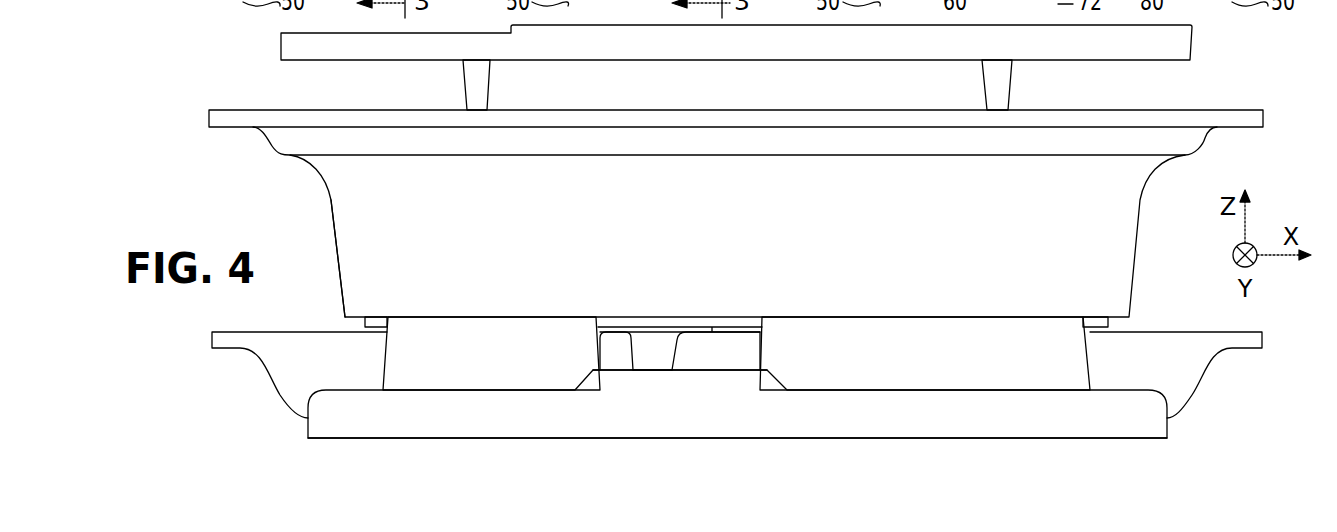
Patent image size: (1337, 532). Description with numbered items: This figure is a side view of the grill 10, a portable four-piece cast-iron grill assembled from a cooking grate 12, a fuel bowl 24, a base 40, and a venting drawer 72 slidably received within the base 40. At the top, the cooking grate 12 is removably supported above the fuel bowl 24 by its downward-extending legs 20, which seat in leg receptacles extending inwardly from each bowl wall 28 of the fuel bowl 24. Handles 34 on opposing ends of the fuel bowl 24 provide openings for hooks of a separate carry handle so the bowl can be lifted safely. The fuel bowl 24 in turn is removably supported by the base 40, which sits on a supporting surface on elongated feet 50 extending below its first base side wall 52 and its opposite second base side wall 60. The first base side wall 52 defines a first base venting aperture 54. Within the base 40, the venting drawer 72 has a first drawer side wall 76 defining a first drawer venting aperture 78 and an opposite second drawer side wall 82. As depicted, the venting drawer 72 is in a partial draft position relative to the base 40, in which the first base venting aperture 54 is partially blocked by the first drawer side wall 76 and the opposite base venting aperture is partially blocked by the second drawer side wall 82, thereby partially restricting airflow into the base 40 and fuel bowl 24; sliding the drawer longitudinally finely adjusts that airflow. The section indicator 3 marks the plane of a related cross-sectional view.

The section line 3- 3 is at (685, 463).
The grill 10 is at (261, 178).
The cooking grate 12 is at (270, 46).
The legs 20 is at (463, 88).
The fuel bowl 24 is at (321, 214).
The bowl wall 28 is at (725, 243).
The handles 34 is at (209, 119).
The base 40 is at (296, 426).
The elongated feet 50 is at (838, 438).
The first base side wall 52 is at (481, 361).
The first base venting aperture 54 is at (721, 342).
The second base side wall 60 is at (653, 363).
The venting drawer 72 is at (256, 378).
The first drawer side wall 76 is at (745, 352).
The first drawer venting aperture 78 is at (650, 340).
The second drawer side wall 82 is at (615, 345).